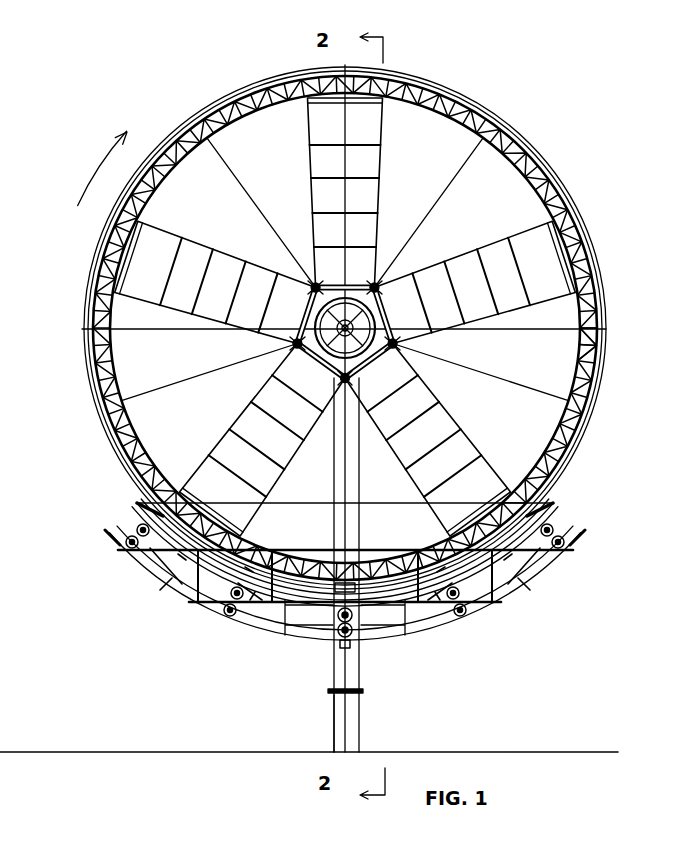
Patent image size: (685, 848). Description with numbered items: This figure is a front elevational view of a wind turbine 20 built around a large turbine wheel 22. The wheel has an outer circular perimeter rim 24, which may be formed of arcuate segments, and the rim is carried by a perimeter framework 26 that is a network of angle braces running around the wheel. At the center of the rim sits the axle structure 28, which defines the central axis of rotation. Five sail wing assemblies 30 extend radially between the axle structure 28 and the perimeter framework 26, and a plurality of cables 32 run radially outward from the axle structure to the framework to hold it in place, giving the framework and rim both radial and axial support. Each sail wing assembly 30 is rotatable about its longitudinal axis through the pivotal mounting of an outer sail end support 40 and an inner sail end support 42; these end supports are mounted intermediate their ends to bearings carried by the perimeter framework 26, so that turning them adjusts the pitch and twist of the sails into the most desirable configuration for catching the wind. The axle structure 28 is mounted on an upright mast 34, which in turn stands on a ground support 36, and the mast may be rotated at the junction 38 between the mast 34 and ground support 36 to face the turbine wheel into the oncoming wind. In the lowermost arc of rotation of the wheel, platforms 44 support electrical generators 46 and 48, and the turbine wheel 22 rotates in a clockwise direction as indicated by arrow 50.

The wind turbine 20 is at (500, 96).
The turbine wheel 22 is at (546, 151).
The perimeter rim 24 is at (554, 191).
The perimeter framework 26 is at (606, 329).
The axle structure 28 is at (399, 318).
The sail wing assembly 30 is at (223, 248).
The cable 32 is at (266, 215).
The mast 34 is at (352, 673).
The ground support 36 is at (352, 713).
The junction 38 is at (342, 692).
The outer sail end support 40 is at (312, 103).
The inner sail end support 42 is at (333, 290).
The platform 44 is at (110, 536).
The generator 46 is at (149, 546).
The generator 48 is at (127, 548).
The arrow 50 is at (92, 168).